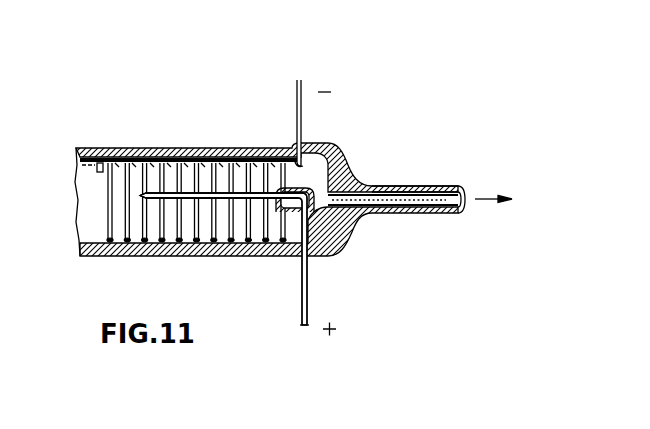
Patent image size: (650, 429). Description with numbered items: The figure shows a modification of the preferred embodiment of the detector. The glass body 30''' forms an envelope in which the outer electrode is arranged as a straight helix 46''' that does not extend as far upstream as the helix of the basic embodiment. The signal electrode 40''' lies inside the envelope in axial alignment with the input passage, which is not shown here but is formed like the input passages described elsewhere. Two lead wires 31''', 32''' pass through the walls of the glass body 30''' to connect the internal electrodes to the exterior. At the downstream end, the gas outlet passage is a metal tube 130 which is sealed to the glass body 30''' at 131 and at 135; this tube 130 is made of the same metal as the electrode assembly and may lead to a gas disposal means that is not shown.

The glass body 30''' is at (189, 166).
The outer electrode helix 46''' is at (266, 186).
The negative lead wire 31''' is at (281, 123).
The positive lead wire 32''' is at (224, 259).
The signal electrode 40''' is at (172, 194).
The seal 135 is at (378, 185).
The seal 131 is at (365, 213).
The metal tube 130 is at (446, 214).